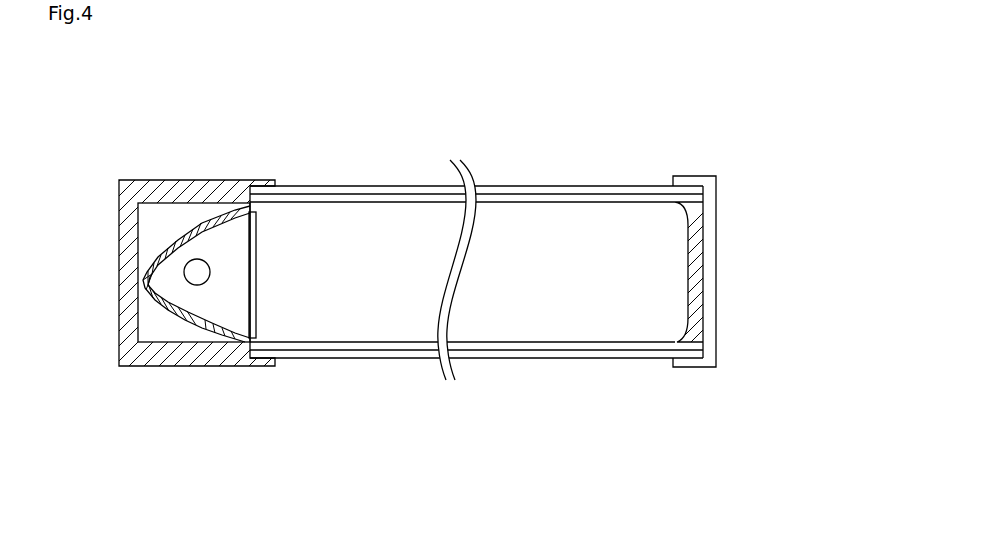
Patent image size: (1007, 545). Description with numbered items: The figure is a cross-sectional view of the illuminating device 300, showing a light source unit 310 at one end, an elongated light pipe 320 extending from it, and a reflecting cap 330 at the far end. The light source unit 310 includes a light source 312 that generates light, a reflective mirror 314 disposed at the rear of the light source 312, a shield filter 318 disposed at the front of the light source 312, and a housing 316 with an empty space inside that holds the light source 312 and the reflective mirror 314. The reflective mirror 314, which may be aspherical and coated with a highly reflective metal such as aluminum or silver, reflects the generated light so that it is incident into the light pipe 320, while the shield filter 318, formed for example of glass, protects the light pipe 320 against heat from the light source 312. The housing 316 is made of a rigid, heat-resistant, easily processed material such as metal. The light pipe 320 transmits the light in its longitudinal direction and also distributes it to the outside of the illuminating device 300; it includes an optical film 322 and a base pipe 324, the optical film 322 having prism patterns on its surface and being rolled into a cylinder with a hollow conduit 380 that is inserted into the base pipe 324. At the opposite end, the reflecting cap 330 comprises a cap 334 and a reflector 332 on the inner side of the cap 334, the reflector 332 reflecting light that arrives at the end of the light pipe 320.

The illuminating device 300 is at (108, 96).
The light source unit 310 is at (225, 344).
The light source 312 is at (198, 277).
The reflective mirror 314 is at (193, 323).
The housing 316 is at (137, 355).
The shield filter 318 is at (256, 285).
The light pipe 320 is at (476, 322).
The optical film 322 is at (507, 343).
The base pipe 324 is at (575, 352).
The reflecting cap 330 is at (770, 333).
The reflector 332 is at (697, 273).
The cap 334 is at (708, 320).
The hollow conduit 380 is at (573, 228).